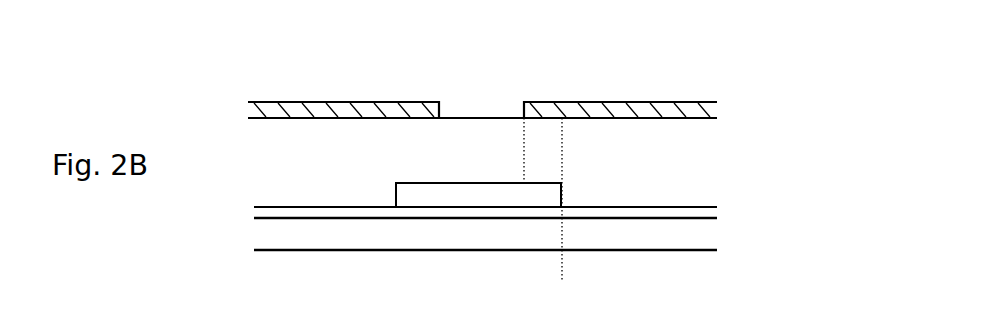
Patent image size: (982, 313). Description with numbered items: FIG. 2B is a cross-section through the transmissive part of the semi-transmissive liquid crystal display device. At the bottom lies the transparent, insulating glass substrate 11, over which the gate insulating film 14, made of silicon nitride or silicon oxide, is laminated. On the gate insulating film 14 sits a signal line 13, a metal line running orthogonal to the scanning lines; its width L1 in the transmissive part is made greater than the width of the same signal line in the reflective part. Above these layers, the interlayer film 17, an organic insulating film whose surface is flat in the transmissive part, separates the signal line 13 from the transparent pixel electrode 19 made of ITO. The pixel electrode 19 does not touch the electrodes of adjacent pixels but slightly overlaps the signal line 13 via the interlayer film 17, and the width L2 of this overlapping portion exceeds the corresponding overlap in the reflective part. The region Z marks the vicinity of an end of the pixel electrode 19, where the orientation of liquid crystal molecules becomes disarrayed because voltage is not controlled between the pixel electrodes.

The glass substrate 11 is at (710, 240).
The signal line 13 is at (412, 197).
The gate insulating film 14 is at (712, 210).
The interlayer film 17 is at (670, 177).
The pixel electrode 19 is at (703, 108).
The vicinity of an end of the pixel electrode Z is at (439, 99).
The width of the signal line in the transmissive part L1 is at (396, 207).
The width of the overlapping portion of the pixel electrode and the signal line L2 is at (572, 84).